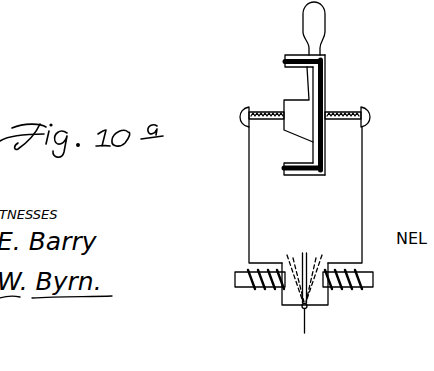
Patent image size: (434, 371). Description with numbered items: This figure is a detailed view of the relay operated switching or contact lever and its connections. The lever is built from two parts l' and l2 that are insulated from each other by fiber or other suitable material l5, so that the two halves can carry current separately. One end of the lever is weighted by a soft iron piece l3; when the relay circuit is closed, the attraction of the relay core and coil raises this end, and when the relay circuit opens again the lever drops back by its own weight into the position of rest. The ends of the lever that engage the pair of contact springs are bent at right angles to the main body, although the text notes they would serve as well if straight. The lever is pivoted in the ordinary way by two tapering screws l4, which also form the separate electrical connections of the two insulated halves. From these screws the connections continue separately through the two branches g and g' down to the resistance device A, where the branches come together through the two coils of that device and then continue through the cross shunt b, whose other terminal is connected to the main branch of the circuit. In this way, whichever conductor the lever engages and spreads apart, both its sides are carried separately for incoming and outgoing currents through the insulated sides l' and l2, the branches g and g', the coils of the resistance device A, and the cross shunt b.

The soft iron piece l3 is at (322, 18).
The insulating fiber l5 is at (283, 170).
The contact lever part l' is at (293, 103).
The contact lever part l2 is at (332, 77).
The tapering screws l4 is at (378, 117).
The branch g is at (241, 195).
The branch g' is at (360, 195).
The resistance device A is at (278, 292).
The cross shunt b is at (307, 317).